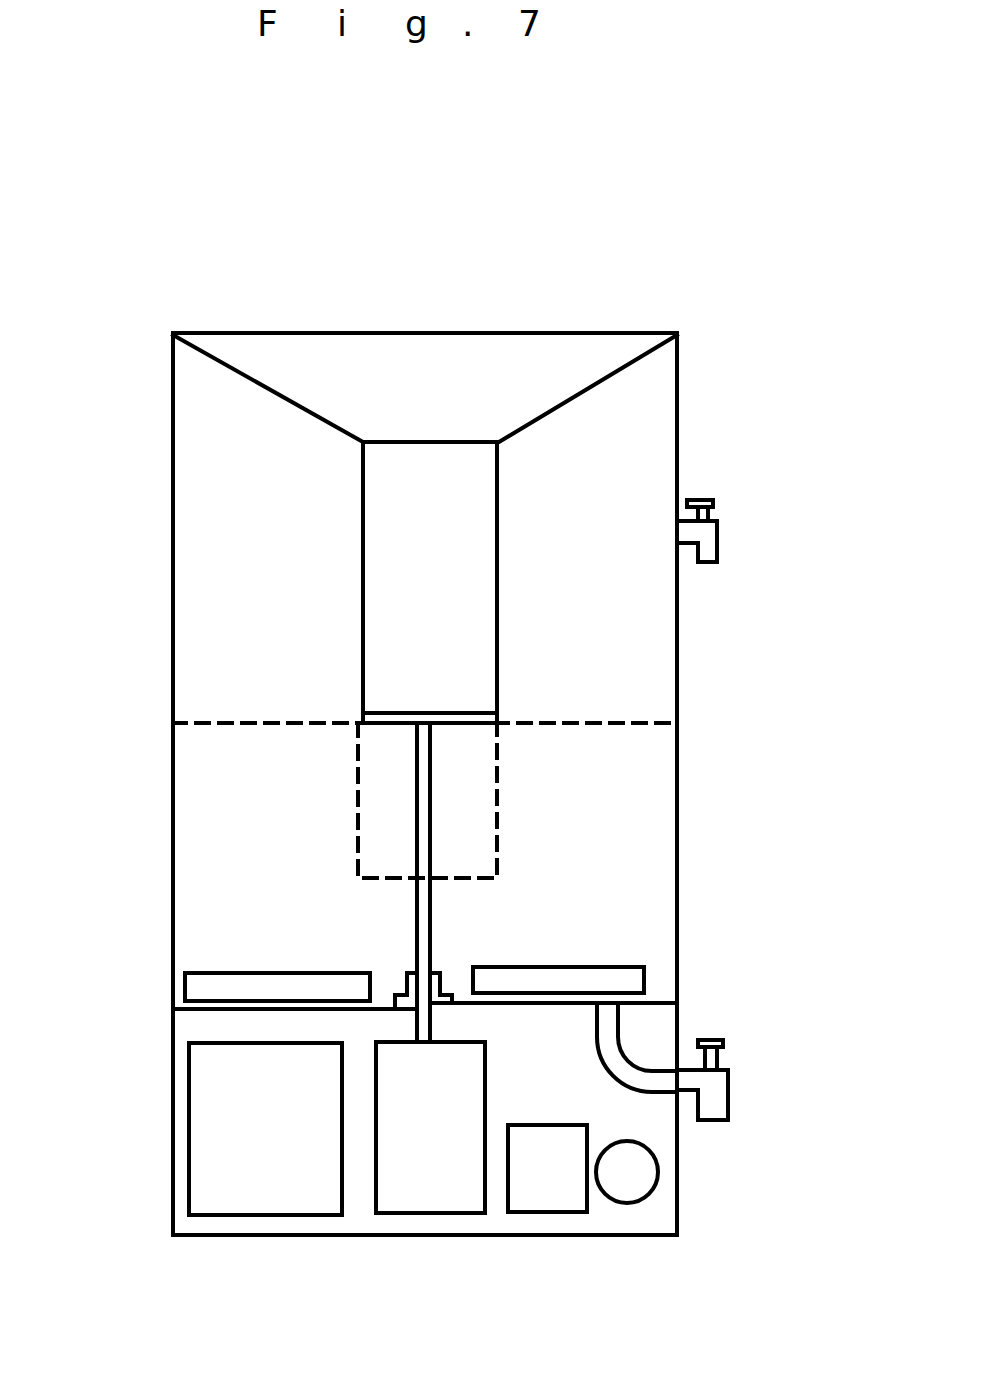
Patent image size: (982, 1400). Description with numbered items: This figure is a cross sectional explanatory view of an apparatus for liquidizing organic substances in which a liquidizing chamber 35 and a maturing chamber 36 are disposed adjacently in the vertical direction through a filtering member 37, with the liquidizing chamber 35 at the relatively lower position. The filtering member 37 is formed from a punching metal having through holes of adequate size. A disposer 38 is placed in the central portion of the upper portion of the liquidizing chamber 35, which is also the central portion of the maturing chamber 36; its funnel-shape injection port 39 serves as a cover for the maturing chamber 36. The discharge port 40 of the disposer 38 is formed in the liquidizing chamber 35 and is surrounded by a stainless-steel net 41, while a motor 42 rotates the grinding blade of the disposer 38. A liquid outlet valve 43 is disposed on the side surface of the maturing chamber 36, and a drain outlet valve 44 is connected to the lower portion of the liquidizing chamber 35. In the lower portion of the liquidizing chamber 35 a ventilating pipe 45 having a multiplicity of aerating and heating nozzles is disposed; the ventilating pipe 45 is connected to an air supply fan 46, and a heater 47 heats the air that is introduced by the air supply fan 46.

The liquidizing chamber 35 is at (228, 812).
The maturing chamber 36 is at (229, 560).
The filtering member 37 is at (253, 722).
The disposer 38 is at (478, 643).
The funnel-shape injection port 39 is at (302, 407).
The discharge port 40 is at (388, 718).
The stainless-steel net 41 is at (498, 805).
The motor 42 is at (427, 1177).
The liquid outlet valve 43 is at (707, 542).
The drain outlet valve 44 is at (717, 1085).
The ventilating pipe 45 is at (258, 987).
The air supply fan 46 is at (253, 1197).
The heater 47 is at (638, 1177).